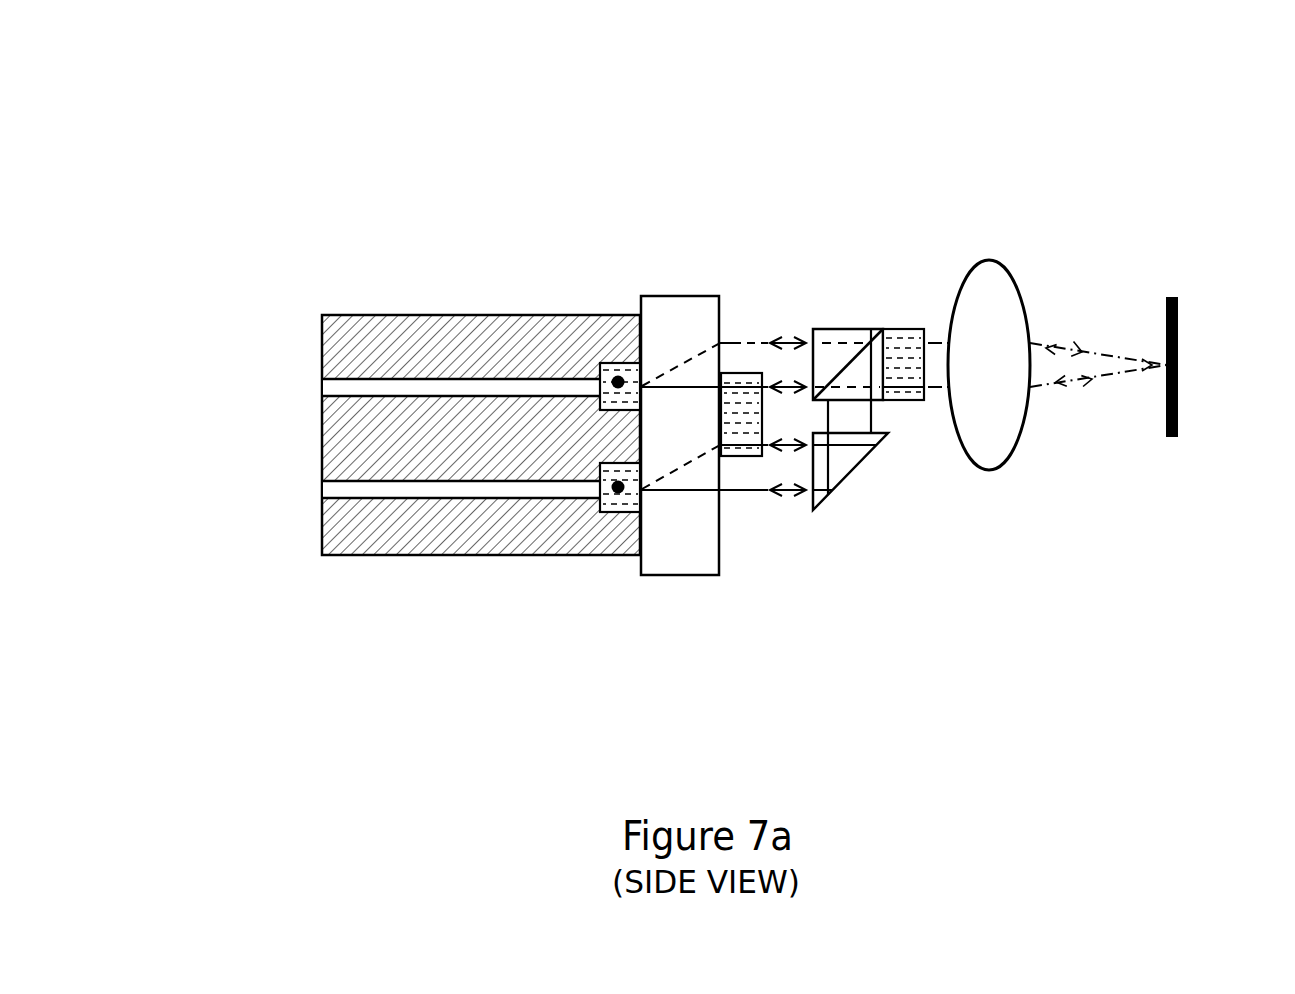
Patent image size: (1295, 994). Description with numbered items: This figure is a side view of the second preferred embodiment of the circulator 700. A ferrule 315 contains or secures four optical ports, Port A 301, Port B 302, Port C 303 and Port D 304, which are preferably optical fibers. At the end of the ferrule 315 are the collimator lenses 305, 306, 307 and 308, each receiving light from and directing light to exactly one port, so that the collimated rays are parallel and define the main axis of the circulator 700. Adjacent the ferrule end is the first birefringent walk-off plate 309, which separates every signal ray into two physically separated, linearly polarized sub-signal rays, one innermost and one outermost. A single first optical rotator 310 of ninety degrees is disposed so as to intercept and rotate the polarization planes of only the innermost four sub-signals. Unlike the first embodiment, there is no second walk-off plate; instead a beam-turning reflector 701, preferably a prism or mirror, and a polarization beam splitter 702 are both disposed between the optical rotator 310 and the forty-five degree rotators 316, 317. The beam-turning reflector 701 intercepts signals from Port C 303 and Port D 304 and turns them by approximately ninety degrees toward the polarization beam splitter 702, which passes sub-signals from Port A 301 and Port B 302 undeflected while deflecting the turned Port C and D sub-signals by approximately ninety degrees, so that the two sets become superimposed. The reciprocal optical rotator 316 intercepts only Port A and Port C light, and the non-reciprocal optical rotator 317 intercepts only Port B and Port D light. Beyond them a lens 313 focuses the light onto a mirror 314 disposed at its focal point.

The circulator 700 is at (443, 97).
The ferrule 315 is at (407, 315).
The Port A 301 is at (370, 366).
The Port B 302 is at (335, 388).
The Port C 303 is at (366, 509).
The Port D 304 is at (332, 493).
The collimator lens 305 is at (533, 299).
The collimator lens 306 is at (616, 380).
The collimator lens 307 is at (537, 570).
The collimator lens 308 is at (616, 490).
The first birefringent walk-off plate 309 is at (657, 580).
The first 90° optical rotator 310 is at (735, 373).
The polarization beam splitter 702 is at (847, 327).
The reciprocal optical rotator 316 is at (945, 292).
The non-reciprocal optical rotator 317 is at (912, 327).
The beam-turning reflector 701 is at (852, 473).
The lens 313 is at (993, 470).
The mirror 314 is at (1173, 293).